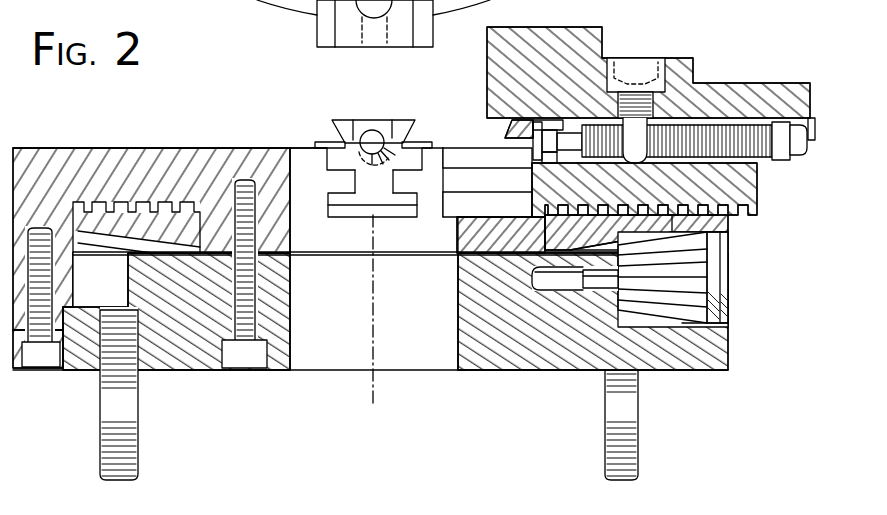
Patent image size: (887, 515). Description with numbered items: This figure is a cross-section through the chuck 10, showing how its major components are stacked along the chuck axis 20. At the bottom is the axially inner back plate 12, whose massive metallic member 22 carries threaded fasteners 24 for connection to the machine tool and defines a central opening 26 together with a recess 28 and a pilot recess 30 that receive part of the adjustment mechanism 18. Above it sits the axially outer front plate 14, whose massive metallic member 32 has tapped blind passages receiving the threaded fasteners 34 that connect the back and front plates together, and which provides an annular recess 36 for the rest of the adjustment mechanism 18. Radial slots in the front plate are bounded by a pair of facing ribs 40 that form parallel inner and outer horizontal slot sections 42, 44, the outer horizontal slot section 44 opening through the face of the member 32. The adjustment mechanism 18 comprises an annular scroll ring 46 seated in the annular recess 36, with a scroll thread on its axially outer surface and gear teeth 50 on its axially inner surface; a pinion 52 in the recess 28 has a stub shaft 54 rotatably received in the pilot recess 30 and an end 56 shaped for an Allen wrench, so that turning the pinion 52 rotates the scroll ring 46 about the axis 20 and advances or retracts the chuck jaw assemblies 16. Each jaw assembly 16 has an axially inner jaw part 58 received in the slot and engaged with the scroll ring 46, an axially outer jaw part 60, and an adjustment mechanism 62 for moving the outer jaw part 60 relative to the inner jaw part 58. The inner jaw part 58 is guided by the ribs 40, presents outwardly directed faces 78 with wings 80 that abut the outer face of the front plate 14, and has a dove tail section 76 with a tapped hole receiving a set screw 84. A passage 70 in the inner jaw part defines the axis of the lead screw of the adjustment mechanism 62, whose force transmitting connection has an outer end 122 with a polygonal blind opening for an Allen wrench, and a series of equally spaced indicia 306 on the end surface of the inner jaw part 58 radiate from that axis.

The chuck 10 is at (778, 46).
The back plate 12 is at (474, 387).
The front plate 14 is at (133, 144).
The chuck jaw assemblies 16 is at (705, 65).
The adjustment mechanism 18 is at (752, 275).
The chuck axis 20 is at (376, 307).
The massive metallic member 22 is at (505, 366).
The threaded fasteners 24 is at (140, 425).
The central opening 26 is at (290, 330).
The recess 28 is at (640, 323).
The pilot recess 30 is at (546, 287).
The massive metallic member 32 is at (50, 158).
The threaded fasteners 34 is at (37, 360).
The annular recess 36 is at (90, 203).
The facing ribs 40 is at (340, 190).
The inner horizontal slot section 42 is at (374, 211).
The outer horizontal slot section 44 is at (333, 139).
The scroll ring 46 is at (118, 275).
The gear teeth 50 is at (123, 240).
The pinion 52 is at (736, 300).
The stub shaft 54 is at (583, 283).
The end 56 is at (727, 258).
The inner jaw part 58 is at (764, 193).
The outer jaw part 60 is at (843, 65).
The adjustment mechanism 62 is at (812, 152).
The passage 70 is at (371, 130).
The dove tail section 76 is at (405, 120).
The outwardly directed faces 78 is at (420, 142).
The wings 80 is at (315, 145).
The set screw 84 is at (533, 158).
The outer end 122 is at (613, 62).
The indicia 306 is at (380, 170).